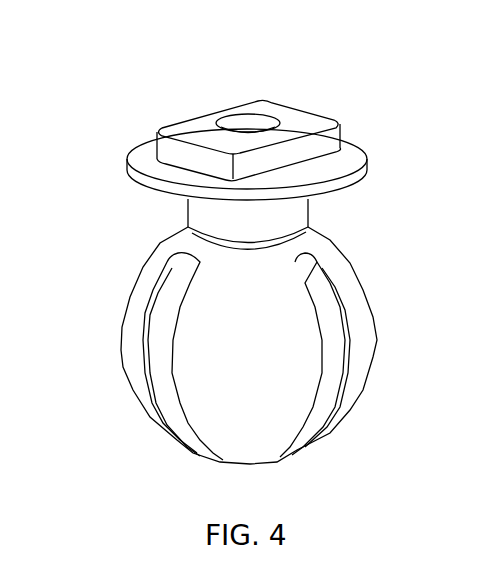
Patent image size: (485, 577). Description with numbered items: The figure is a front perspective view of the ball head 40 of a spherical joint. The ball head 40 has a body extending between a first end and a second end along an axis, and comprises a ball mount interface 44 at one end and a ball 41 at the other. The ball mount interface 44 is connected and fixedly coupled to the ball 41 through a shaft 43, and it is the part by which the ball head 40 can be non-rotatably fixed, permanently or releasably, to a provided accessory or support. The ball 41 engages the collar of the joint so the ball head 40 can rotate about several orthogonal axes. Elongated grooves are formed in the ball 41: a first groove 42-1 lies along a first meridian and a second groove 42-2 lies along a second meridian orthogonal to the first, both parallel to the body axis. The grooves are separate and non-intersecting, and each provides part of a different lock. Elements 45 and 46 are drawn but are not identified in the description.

The ball head 40 is at (118, 120).
The ball 41 is at (123, 350).
The first groove 42-1 is at (343, 337).
The second groove 42-2 is at (158, 318).
The shaft 43 is at (310, 208).
The ball mount interface 44 is at (275, 99).
The hole 45 is at (237, 115).
The flange 46 is at (360, 146).